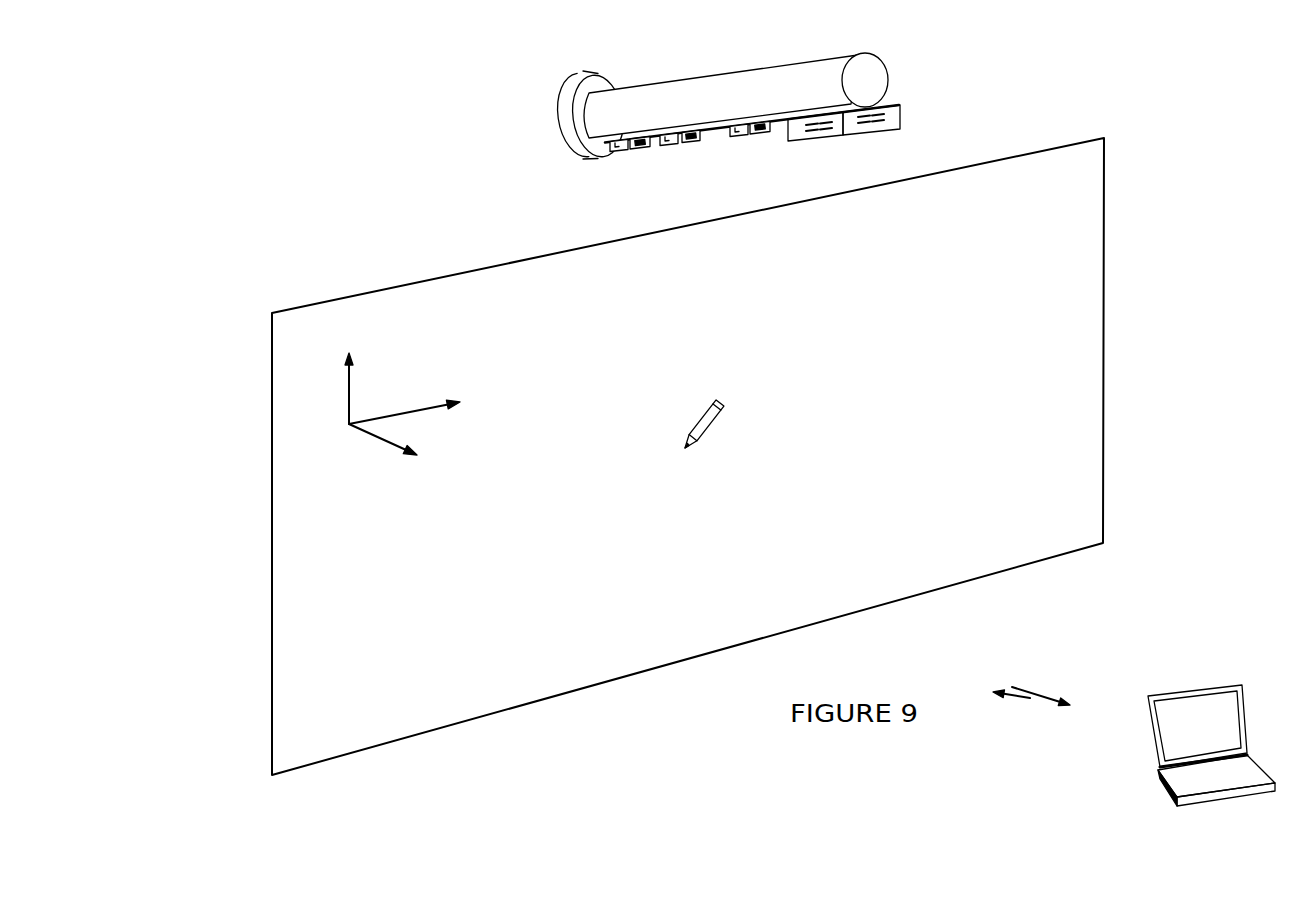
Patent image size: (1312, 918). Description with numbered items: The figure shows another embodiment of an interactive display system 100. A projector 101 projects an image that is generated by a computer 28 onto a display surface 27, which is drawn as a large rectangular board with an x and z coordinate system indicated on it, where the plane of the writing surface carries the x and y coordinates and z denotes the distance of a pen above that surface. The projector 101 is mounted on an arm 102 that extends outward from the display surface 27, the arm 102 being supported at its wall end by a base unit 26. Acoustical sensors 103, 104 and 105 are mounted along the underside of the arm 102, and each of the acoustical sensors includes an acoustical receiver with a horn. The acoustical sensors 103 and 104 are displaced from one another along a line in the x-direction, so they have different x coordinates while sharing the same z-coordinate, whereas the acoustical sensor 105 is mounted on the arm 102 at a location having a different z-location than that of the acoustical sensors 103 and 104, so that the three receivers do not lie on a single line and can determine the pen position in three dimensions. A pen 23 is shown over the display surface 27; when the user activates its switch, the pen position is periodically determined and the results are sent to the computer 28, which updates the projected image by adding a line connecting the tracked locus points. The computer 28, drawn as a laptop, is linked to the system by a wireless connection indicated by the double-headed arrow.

The display system 100 is at (228, 192).
The projector 101 is at (900, 112).
The arm 102 is at (743, 83).
The acoustical sensor 103 is at (617, 146).
The acoustical sensor 104 is at (668, 139).
The acoustical sensor 105 is at (745, 130).
The base unit 26 is at (565, 135).
The pen 23 is at (708, 428).
The display surface 27 is at (513, 690).
The computer 28 is at (1188, 700).